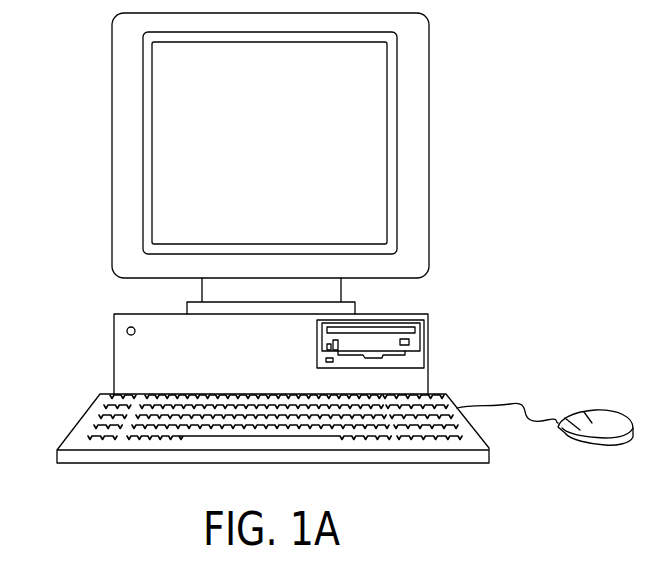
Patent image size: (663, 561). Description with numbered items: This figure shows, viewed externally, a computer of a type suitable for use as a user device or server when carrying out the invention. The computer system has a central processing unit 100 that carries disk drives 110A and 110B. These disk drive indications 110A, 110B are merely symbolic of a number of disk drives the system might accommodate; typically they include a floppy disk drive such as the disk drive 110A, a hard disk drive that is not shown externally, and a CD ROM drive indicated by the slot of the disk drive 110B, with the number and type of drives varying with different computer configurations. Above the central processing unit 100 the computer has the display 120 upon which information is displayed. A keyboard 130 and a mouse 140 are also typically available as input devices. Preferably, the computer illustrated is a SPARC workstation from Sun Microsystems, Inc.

The central processing unit 100 is at (113, 330).
The disk drive 110A is at (426, 330).
The disk drive 110B is at (426, 357).
The display 120 is at (432, 112).
The keyboard 130 is at (63, 439).
The mouse 140 is at (607, 411).